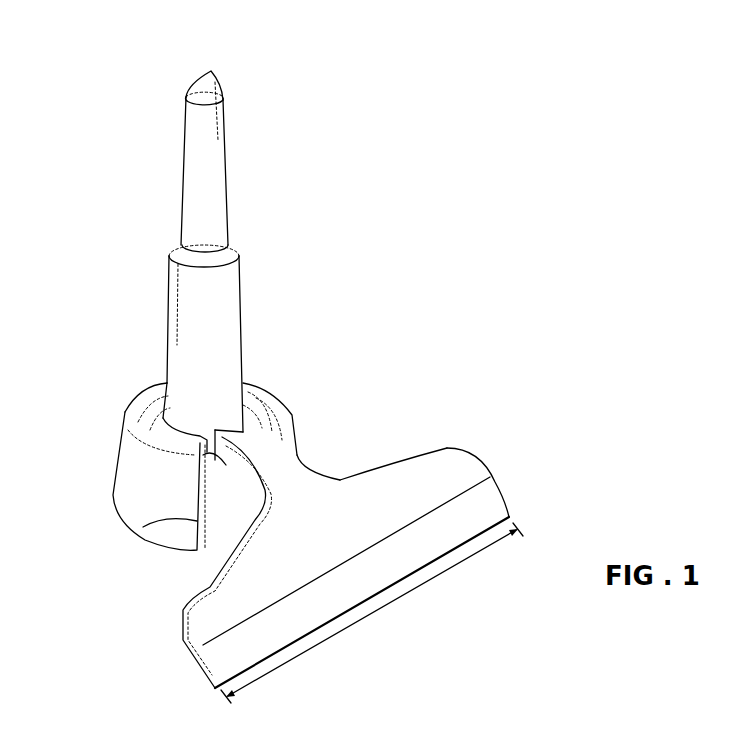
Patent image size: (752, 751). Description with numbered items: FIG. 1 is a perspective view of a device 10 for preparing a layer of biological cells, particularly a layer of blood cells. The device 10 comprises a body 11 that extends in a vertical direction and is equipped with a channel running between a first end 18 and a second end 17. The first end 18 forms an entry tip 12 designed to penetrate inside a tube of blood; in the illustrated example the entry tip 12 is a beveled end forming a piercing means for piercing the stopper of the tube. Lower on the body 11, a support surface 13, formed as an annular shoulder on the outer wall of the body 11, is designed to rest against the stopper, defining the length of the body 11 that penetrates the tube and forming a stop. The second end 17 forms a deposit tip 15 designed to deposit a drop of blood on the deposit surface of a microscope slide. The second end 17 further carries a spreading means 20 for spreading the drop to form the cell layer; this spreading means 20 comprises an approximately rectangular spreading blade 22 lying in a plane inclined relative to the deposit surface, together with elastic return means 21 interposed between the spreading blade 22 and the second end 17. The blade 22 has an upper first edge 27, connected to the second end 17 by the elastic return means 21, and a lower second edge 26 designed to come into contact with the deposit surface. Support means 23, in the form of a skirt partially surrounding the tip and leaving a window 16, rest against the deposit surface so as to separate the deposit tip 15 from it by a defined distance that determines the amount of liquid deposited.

The device 10 is at (337, 318).
The body 11 is at (178, 185).
The entry tip 12 is at (219, 80).
The first end 18 is at (233, 100).
The support surface 13 is at (238, 250).
The second end 17 is at (246, 374).
The support means 23 is at (130, 407).
The deposit tip 15 is at (160, 522).
The elastic return means 21 is at (270, 452).
The spreading means 20 is at (445, 437).
The window 16 is at (228, 512).
The upper first edge 27 is at (383, 462).
The spreading blade 22 is at (488, 466).
The lower second edge 26 is at (417, 572).